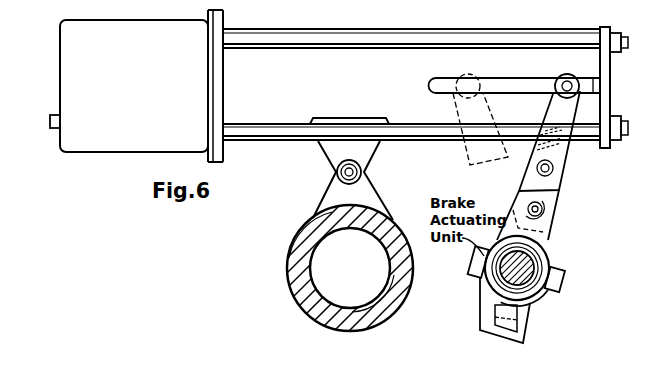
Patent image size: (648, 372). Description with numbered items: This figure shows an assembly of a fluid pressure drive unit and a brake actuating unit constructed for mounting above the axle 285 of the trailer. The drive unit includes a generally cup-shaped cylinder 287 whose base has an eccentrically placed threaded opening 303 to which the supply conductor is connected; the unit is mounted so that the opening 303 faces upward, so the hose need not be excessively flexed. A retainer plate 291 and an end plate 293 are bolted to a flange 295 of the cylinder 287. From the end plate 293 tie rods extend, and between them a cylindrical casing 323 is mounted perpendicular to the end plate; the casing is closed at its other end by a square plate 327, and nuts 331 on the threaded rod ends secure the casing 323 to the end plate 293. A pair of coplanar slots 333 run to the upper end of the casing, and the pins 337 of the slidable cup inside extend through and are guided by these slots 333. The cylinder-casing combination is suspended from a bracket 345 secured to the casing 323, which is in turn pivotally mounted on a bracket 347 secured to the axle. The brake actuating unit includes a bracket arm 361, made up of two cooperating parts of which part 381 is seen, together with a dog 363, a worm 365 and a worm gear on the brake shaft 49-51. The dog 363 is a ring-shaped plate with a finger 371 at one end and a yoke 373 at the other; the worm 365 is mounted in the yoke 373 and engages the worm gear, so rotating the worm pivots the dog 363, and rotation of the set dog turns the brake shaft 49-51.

The cylinder 287 is at (149, 135).
The threaded opening 303 is at (53, 129).
The flange 295 is at (207, 103).
The retainer plate 291 is at (214, 68).
The end plate 293 is at (237, 118).
The cylindrical casing 323 is at (300, 141).
The bracket 347 is at (325, 200).
The bracket 345 is at (360, 165).
The axle 285 is at (297, 290).
The slots 333 is at (535, 66).
The pins 337 is at (574, 64).
The square plate 327 is at (608, 109).
The nuts 331 is at (610, 140).
The bracket arm 361 is at (592, 208).
The cooperating part 381 is at (553, 169).
The finger 371 is at (502, 224).
The brake shaft 49-51 is at (554, 291).
The dog 363 is at (585, 326).
The yoke 373 is at (490, 340).
The worm 365 is at (508, 341).